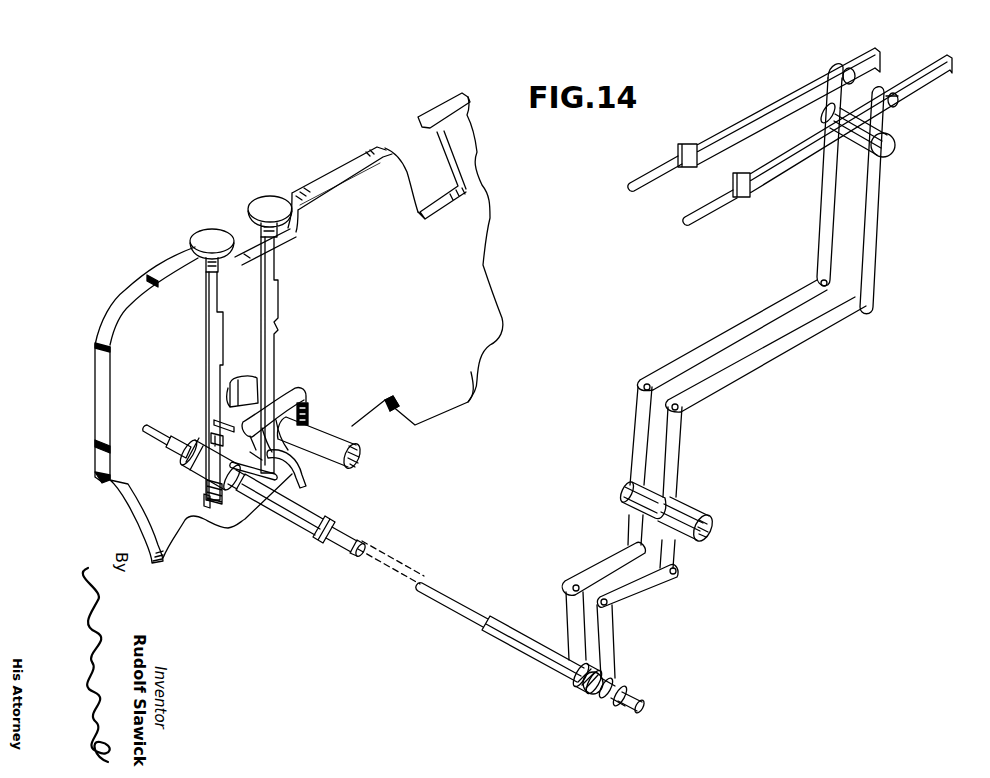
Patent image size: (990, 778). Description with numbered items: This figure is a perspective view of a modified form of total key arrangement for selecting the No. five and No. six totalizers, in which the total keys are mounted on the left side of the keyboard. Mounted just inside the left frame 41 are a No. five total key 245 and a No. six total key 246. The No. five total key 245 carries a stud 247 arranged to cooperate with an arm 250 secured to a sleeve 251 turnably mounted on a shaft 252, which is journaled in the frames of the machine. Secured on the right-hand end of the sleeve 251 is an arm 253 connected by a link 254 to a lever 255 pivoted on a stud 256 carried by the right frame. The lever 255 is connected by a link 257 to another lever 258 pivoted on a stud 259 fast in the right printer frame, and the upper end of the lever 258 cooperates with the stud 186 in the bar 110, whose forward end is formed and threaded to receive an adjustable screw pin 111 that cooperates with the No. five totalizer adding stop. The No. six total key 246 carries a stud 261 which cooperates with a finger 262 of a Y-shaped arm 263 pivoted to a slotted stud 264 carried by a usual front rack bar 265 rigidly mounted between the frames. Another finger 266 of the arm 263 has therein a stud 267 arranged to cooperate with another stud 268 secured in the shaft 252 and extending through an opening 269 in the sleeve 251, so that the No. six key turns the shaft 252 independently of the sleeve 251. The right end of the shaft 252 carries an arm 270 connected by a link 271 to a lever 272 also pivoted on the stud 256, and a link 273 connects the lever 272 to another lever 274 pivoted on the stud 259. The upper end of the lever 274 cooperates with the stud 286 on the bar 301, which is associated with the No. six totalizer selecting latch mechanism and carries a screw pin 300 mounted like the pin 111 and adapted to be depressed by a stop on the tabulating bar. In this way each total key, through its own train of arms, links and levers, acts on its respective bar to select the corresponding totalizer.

The left frame 41 is at (331, 184).
The No. 5 total key 245 is at (278, 302).
The No. 6 total key 246 is at (207, 336).
The finger 266 is at (245, 407).
The Y-shaped arm 263 is at (294, 389).
The slotted stud 264 is at (309, 404).
The front rack bar 265 is at (322, 432).
The stud 261 is at (213, 419).
The finger 262 is at (209, 439).
The opening 269 is at (204, 480).
The stud 268 is at (205, 499).
The stud 267 is at (241, 496).
The stud 247 is at (309, 452).
The arm 250 is at (282, 474).
The sleeve 251 is at (324, 518).
The shaft 252 is at (356, 541).
The stud 186 is at (862, 65).
The bar 110 is at (772, 111).
The adjustable screw pin 111 is at (658, 168).
The stud 286 is at (898, 103).
The stud 259 is at (890, 152).
The screw pin 300 is at (719, 206).
The bar 301 is at (783, 158).
The lever 258 is at (820, 229).
The lever 274 is at (873, 229).
The link 257 is at (722, 344).
The link 273 is at (793, 347).
The lever 255 is at (642, 446).
The lever 272 is at (686, 463).
The stud 256 is at (622, 494).
The link 254 is at (597, 567).
The link 271 is at (650, 584).
The arm 253 is at (573, 623).
The arm 270 is at (608, 653).